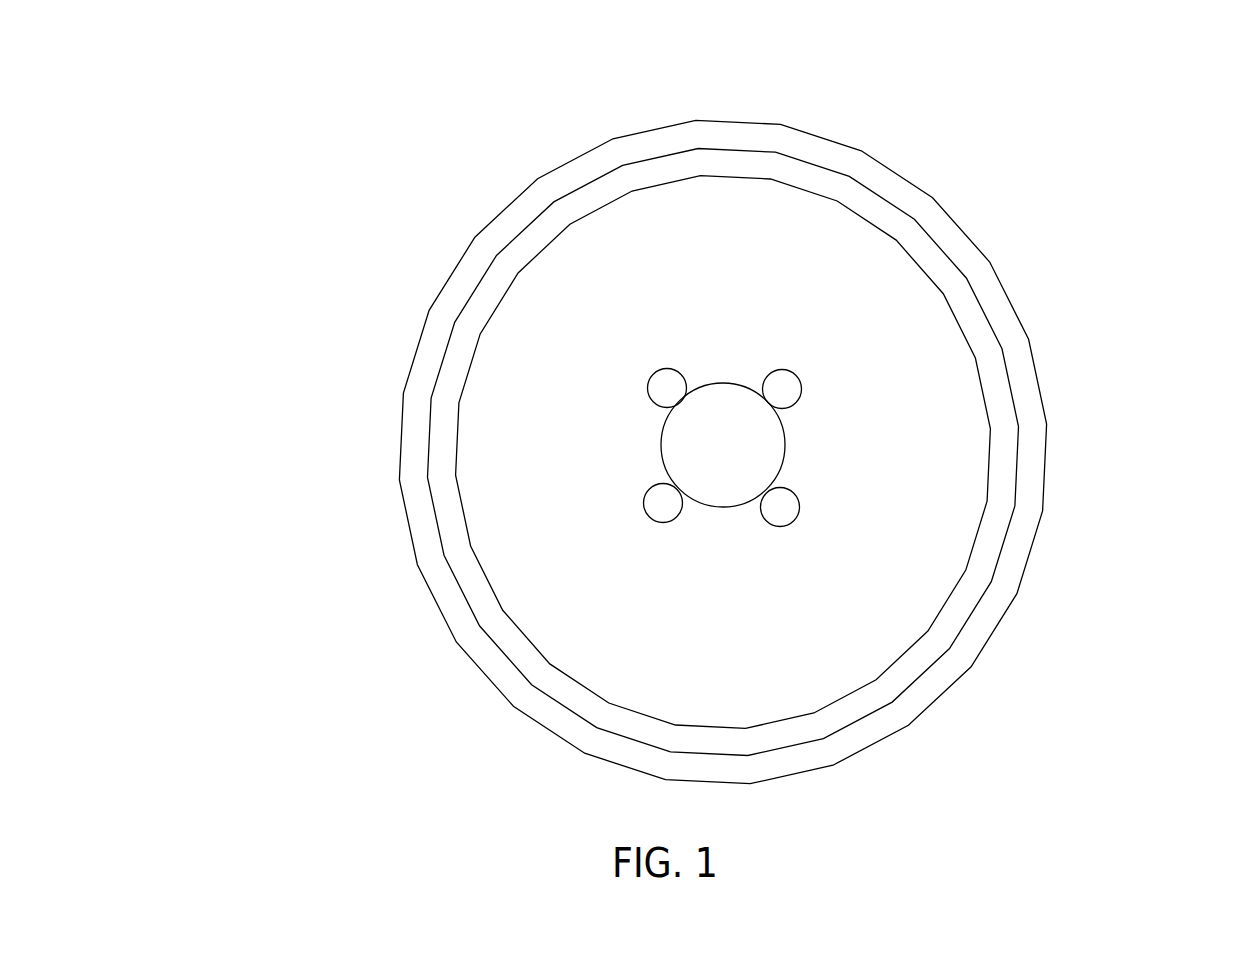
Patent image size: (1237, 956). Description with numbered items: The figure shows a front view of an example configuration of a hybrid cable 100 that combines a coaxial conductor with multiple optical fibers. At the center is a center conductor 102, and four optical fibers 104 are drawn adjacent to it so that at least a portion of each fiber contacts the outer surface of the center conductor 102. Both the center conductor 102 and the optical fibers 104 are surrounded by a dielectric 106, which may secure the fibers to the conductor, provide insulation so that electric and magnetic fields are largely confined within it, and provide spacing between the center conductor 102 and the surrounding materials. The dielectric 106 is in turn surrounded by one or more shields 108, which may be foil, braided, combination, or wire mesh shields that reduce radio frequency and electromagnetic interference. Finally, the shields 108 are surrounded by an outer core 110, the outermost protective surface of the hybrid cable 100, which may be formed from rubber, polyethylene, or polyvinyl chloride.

The hybrid cable 100 is at (1158, 33).
The center conductor 102 is at (720, 455).
The optical fibers 104 is at (782, 388).
The dielectric 106 is at (483, 378).
The shields 108 is at (572, 205).
The outer core 110 is at (885, 183).